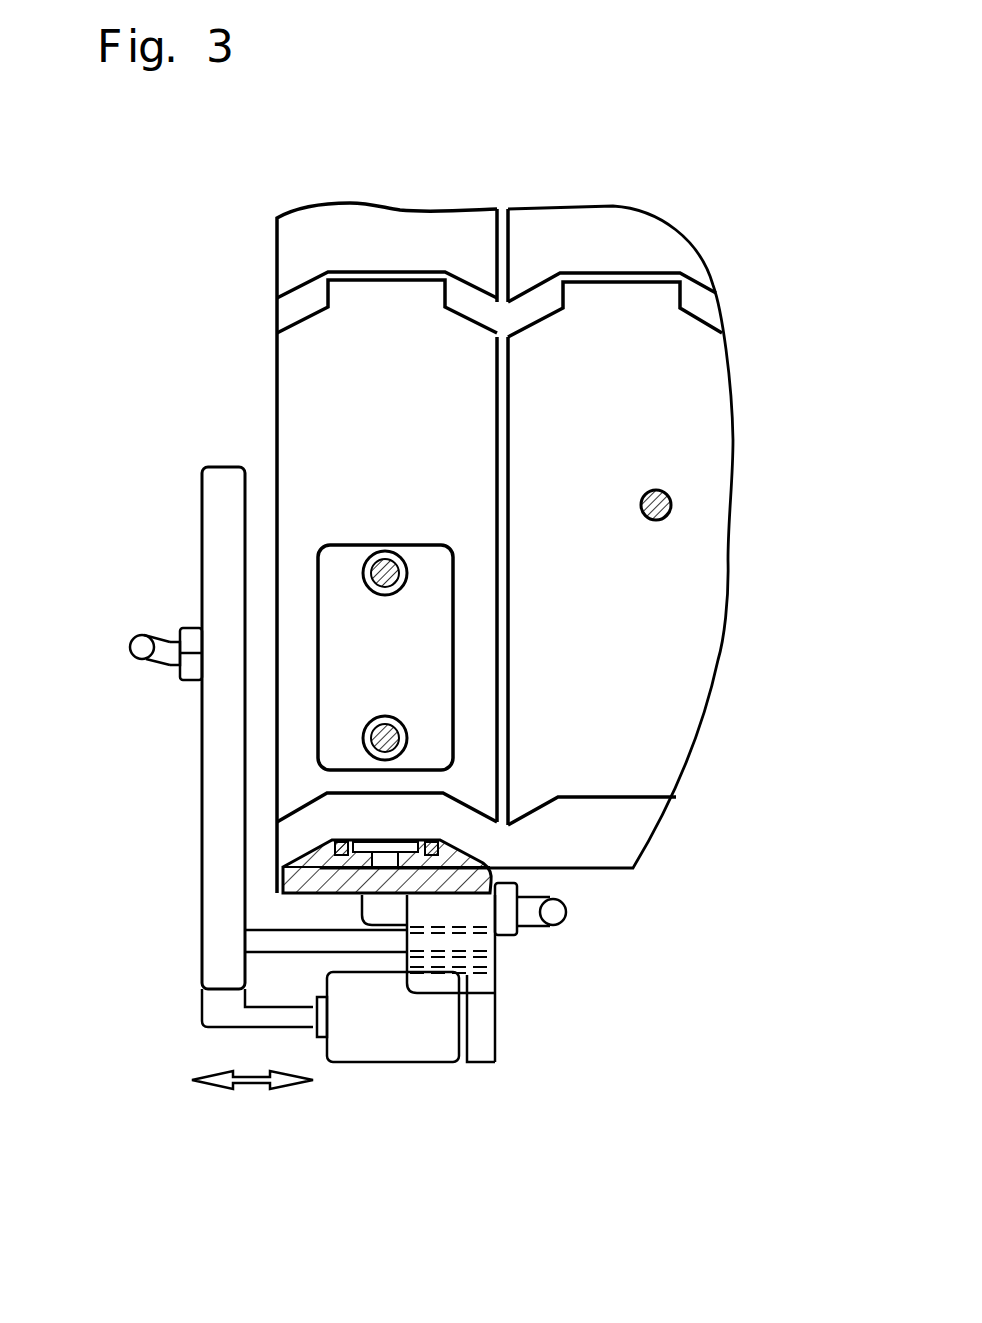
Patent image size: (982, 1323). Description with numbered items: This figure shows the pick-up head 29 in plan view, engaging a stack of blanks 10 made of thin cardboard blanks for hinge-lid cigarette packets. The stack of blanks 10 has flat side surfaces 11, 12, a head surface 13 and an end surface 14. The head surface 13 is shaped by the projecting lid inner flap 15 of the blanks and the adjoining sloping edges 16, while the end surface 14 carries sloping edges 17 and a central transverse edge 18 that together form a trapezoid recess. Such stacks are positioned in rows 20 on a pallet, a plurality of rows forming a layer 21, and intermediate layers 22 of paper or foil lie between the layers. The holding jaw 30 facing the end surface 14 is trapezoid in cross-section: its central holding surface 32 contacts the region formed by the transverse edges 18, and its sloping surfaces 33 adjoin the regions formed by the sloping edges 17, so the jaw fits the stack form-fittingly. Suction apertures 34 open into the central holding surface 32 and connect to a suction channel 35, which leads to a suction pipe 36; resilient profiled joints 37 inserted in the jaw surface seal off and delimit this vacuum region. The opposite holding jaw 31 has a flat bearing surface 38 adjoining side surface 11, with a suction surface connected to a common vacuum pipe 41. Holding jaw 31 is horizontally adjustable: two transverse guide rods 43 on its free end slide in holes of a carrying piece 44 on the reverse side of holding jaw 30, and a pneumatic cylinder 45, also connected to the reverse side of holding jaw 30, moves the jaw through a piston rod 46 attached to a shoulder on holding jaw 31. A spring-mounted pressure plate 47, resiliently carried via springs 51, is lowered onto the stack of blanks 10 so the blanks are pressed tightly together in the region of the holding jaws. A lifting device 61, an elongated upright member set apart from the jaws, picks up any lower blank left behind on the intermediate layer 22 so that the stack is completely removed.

The stack of blanks 10 is at (459, 502).
The side surface 11 is at (278, 218).
The side surface 12 is at (507, 237).
The head surface 13 is at (394, 252).
The end surface 14 is at (427, 811).
The lid inner flap 15 is at (355, 293).
The sloping edges 16 is at (308, 318).
The sloping edges 17 is at (338, 842).
The transverse edge 18 is at (347, 790).
The row 20 is at (595, 490).
The layer 21 is at (595, 490).
The intermediate layer 22 is at (538, 300).
The pick-up head 29 is at (599, 1016).
The holding jaw 30 is at (300, 933).
The holding jaw 31 is at (152, 728).
The central holding surface 32 is at (360, 847).
The sloping surfaces 33 is at (500, 843).
The suction apertures 34 is at (372, 856).
The suction channel 35 is at (393, 862).
The suction pipe 36 is at (482, 973).
The profiled joints 37 is at (300, 905).
The bearing surface 38 is at (250, 590).
The vacuum pipe 41 is at (130, 647).
The transverse guide rods 43 is at (302, 938).
The carrying piece 44 is at (553, 926).
The pneumatic cylinder 45 is at (428, 1037).
The piston rod 46 is at (275, 1018).
The pressure plate 47 is at (423, 640).
The springs 51 is at (407, 583).
The lifting device 61 is at (672, 508).